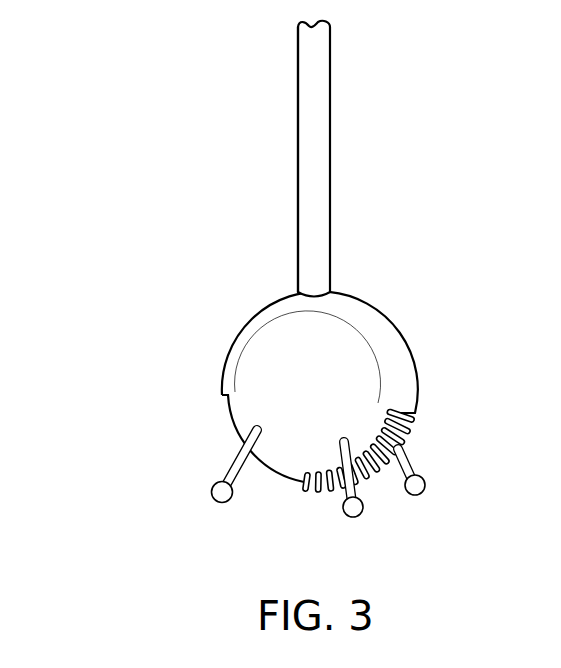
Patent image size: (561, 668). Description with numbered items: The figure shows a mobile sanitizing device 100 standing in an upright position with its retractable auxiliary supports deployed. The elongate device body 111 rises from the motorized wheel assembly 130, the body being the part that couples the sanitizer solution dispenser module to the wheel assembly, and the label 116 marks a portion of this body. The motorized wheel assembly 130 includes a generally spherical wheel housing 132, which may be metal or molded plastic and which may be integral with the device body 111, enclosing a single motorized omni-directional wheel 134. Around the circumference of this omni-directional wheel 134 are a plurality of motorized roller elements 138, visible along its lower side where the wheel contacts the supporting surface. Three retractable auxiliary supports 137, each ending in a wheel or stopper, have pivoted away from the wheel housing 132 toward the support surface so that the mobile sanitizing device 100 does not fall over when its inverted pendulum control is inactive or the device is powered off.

The mobile sanitizing device 100 is at (286, 289).
The device body 111 is at (348, 159).
The elongated shaft body 116 is at (297, 115).
The motorized wheel assembly 130 is at (351, 383).
The wheel housing 132 is at (253, 358).
The motorized omni-directional wheel 134 is at (416, 479).
The retractable auxiliary supports 137 is at (215, 502).
The motorized roller elements 138 is at (320, 493).